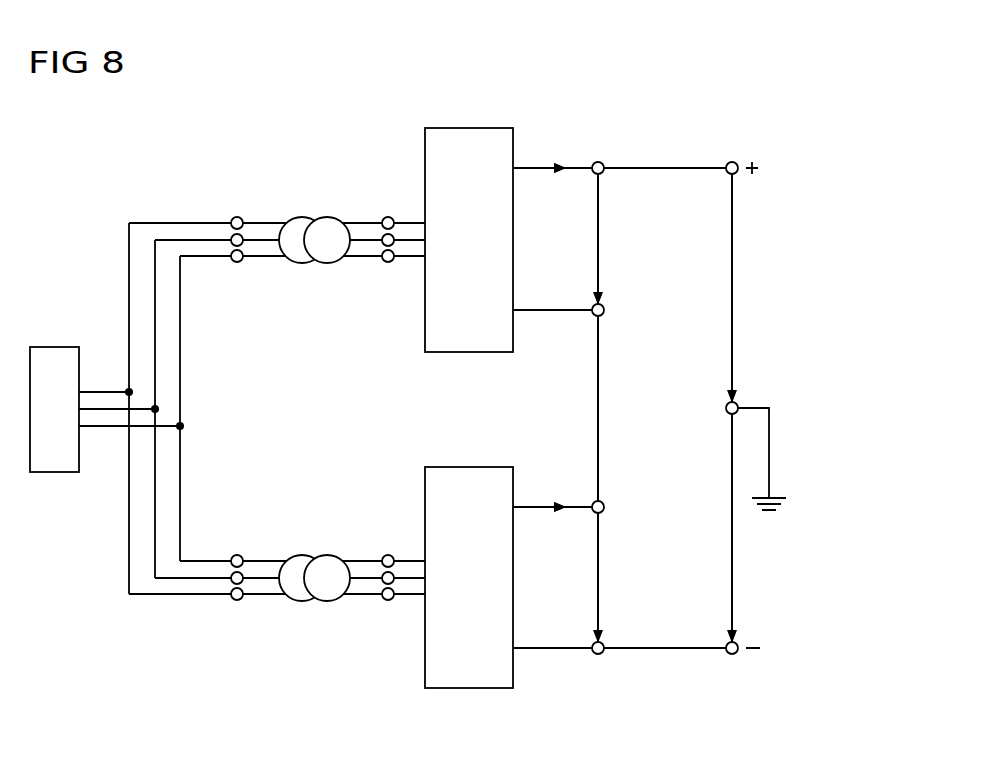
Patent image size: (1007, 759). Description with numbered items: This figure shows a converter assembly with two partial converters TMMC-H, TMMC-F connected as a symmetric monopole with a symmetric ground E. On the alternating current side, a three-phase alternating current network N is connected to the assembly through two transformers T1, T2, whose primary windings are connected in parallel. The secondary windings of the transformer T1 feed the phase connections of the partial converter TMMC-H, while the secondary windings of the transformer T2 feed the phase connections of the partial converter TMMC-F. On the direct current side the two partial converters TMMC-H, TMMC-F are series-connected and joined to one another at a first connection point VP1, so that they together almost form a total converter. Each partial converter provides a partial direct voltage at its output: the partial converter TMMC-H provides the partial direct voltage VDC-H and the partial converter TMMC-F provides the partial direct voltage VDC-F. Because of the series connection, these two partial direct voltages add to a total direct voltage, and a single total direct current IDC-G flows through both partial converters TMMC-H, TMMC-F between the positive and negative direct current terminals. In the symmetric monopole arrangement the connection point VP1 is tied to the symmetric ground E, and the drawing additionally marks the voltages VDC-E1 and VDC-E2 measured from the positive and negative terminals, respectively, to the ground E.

The alternating current network N is at (57, 347).
The transformer T1 is at (302, 217).
The transformer T2 is at (302, 555).
The partial converter TMMC-H is at (470, 128).
The partial converter TMMC-F is at (470, 467).
The total direct current IDC-G is at (562, 163).
The partial direct voltage VDC-H is at (598, 232).
The partial direct voltage VDC-F is at (598, 573).
The connection point VP1 is at (598, 408).
The DC voltage to earth, positive pole VDC-E1 is at (732, 296).
The DC voltage to earth, negative pole VDC-E2 is at (732, 553).
The symmetric ground E is at (778, 498).